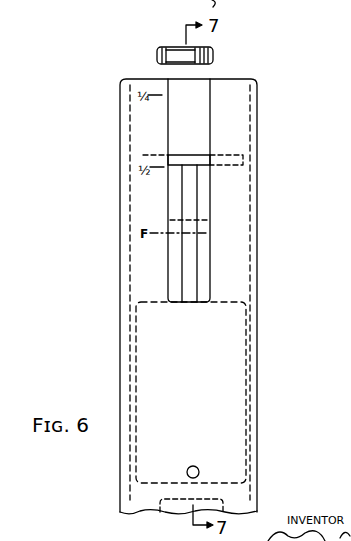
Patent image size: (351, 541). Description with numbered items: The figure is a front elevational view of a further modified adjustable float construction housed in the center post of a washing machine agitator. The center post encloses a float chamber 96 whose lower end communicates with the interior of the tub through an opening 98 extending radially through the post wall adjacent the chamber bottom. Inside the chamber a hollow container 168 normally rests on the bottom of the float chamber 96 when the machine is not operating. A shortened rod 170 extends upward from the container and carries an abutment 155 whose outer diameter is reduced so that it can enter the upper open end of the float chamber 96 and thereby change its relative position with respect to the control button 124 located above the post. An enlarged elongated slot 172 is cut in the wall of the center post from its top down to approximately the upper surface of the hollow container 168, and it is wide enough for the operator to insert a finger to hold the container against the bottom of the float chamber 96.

The float chamber 96 is at (243, 229).
The control button 124 is at (158, 61).
The rod 170 is at (188, 197).
The abutment 155 is at (192, 153).
The elongated slot 172 is at (172, 250).
The hollow container 168 is at (143, 341).
The opening 98 is at (187, 472).